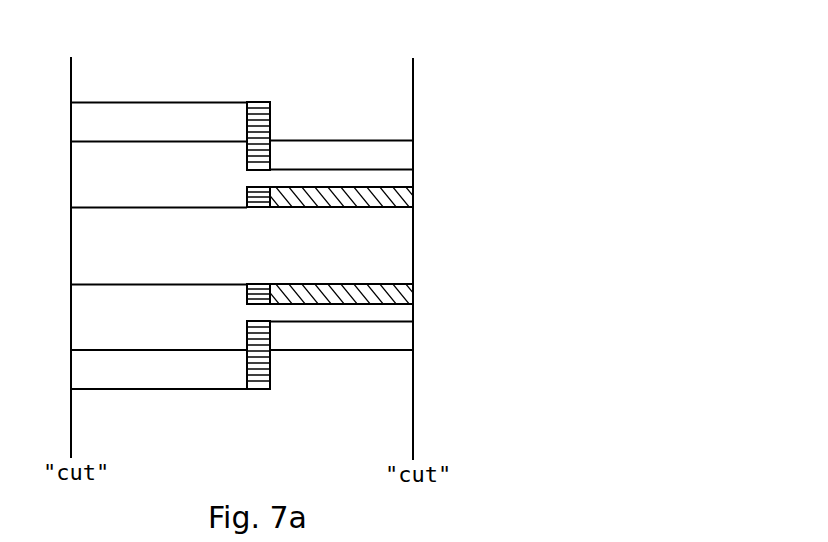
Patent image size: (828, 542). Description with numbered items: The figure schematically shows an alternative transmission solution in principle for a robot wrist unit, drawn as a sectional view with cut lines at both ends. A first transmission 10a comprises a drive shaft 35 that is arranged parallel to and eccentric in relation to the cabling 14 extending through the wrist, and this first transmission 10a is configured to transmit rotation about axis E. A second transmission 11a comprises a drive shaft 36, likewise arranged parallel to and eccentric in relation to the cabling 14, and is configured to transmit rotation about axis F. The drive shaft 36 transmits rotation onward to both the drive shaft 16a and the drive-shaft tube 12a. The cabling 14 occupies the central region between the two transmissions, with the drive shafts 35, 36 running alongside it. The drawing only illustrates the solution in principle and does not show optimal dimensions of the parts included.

The first transmission 10a is at (263, 77).
The second transmission 11a is at (267, 395).
The drive-shaft tube 12a is at (407, 297).
The cabling 14 is at (393, 252).
The drive shaft 16a is at (173, 377).
The drive shaft 35 is at (398, 158).
The drive shaft 36 is at (407, 343).